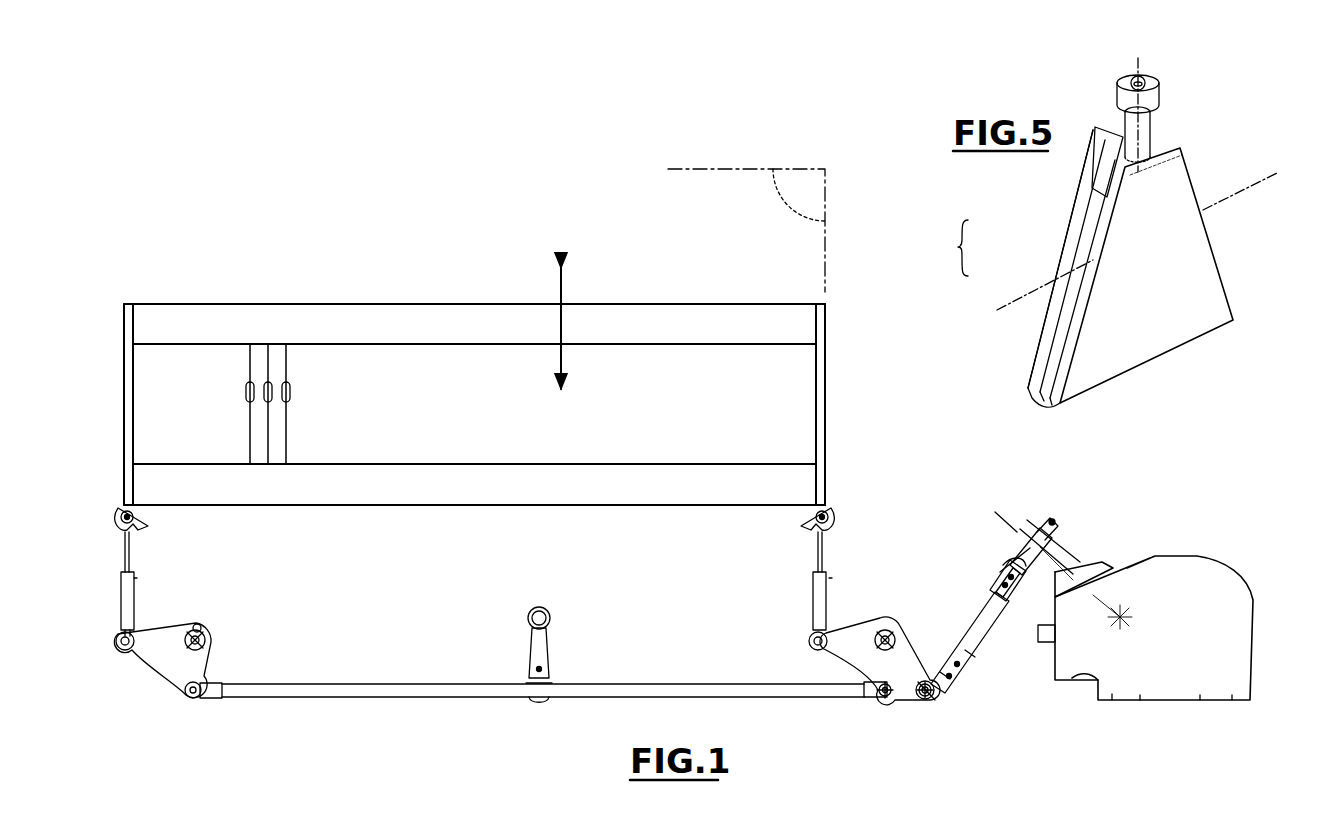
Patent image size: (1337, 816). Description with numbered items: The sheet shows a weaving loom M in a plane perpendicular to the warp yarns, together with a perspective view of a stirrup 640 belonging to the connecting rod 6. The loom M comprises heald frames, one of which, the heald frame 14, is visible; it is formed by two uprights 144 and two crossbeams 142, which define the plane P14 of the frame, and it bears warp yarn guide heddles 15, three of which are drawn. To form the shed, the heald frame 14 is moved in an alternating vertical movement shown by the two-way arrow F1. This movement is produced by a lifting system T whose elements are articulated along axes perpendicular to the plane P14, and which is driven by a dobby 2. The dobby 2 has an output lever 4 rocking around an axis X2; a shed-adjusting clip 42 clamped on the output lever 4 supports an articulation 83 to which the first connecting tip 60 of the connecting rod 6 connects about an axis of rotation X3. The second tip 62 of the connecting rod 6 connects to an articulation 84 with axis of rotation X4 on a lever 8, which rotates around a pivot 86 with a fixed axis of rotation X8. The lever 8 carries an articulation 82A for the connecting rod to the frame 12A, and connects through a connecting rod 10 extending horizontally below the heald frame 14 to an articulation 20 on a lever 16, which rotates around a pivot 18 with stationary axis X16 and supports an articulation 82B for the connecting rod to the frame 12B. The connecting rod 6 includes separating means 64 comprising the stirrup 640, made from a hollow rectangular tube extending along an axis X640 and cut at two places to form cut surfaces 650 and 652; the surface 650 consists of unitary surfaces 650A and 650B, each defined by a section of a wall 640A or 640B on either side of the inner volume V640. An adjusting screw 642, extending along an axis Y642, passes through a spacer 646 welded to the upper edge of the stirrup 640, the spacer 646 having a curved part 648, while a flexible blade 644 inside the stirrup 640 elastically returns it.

In FIG. 1, the dobby 2 is at (1192, 592).
In FIG. 1, the output lever 4 is at (1057, 548).
In FIG. 1, the connecting rod 6 is at (986, 621).
In FIG. 1, the lever 8 is at (856, 636).
In FIG. 1, the connecting rod 10 is at (457, 690).
In FIG. 1, the connecting rod to the frame 12A is at (816, 592).
In FIG. 1, the connecting rod to the frame 12B is at (121, 605).
In FIG. 1, the heald frame 14 is at (695, 282).
In FIG. 1, the warp yarn guide heddles 15 is at (252, 450).
In FIG. 1, the lever 16 is at (160, 625).
In FIG. 1, the pivot 18 is at (200, 626).
In FIG. 1, the articulation 20 is at (185, 699).
In FIG. 1, the shed-adjusting clip 42 is at (1025, 523).
In FIG. 1, the first connecting tip 60 is at (1000, 572).
In FIG. 1, the second tip 62 is at (953, 650).
In FIG. 5, the separating means 64 is at (1107, 220).
In FIG. 1, the articulation 82A is at (810, 632).
In FIG. 1, the articulation 82B is at (133, 652).
In FIG. 1, the articulation 83 is at (1000, 562).
In FIG. 1, the articulation 84 is at (930, 700).
In FIG. 1, the pivot 86 is at (893, 630).
In FIG. 1, the crossbeams 142 is at (451, 315).
In FIG. 1, the uprights 144 is at (128, 368).
In FIG. 1, the stirrup 640 is at (992, 600).
In FIG. 5, the stirrup 640 is at (1117, 268).
In FIG. 5, the wall 640A is at (1200, 312).
In FIG. 5, the wall 640B is at (1045, 368).
In FIG. 5, the adjusting screw 642 is at (1164, 102).
In FIG. 5, the flexible blade 644 is at (1062, 348).
In FIG. 5, the spacer 646 is at (1103, 195).
In FIG. 5, the curved part 648 is at (1105, 152).
In FIG. 5, the cut surface 650 is at (1007, 265).
In FIG. 5, the unitary surface 650A is at (1062, 243).
In FIG. 5, the unitary surface 650B is at (1088, 287).
In FIG. 5, the cut surface 652 is at (1192, 177).
In FIG. 1, the axis X2 is at (1133, 603).
In FIG. 1, the axis of rotation X3 is at (1000, 553).
In FIG. 1, the axis of rotation X4 is at (917, 700).
In FIG. 1, the axis of rotation X8 is at (878, 648).
In FIG. 1, the axis of rotation X16 is at (205, 650).
In FIG. 5, the axis X640 is at (1247, 179).
In FIG. 5, the axis Y642 is at (1180, 78).
In FIG. 5, the inner volume V640 is at (1098, 218).
In FIG. 1, the two-way arrow F1 is at (578, 328).
In FIG. 1, the weaving loom M is at (847, 344).
In FIG. 1, the lifting system T is at (888, 574).
In FIG. 1, the plane P14 is at (746, 230).